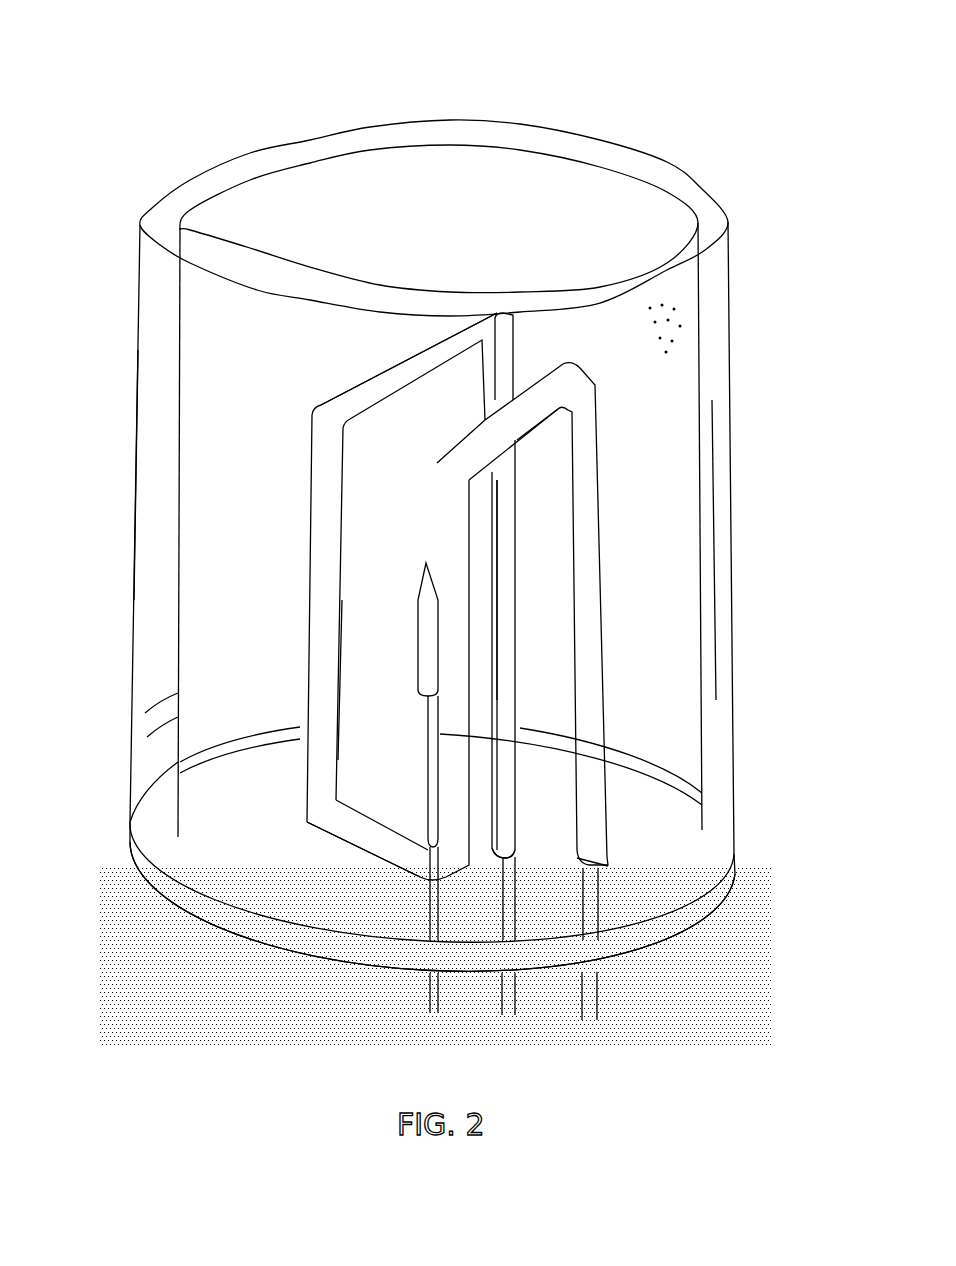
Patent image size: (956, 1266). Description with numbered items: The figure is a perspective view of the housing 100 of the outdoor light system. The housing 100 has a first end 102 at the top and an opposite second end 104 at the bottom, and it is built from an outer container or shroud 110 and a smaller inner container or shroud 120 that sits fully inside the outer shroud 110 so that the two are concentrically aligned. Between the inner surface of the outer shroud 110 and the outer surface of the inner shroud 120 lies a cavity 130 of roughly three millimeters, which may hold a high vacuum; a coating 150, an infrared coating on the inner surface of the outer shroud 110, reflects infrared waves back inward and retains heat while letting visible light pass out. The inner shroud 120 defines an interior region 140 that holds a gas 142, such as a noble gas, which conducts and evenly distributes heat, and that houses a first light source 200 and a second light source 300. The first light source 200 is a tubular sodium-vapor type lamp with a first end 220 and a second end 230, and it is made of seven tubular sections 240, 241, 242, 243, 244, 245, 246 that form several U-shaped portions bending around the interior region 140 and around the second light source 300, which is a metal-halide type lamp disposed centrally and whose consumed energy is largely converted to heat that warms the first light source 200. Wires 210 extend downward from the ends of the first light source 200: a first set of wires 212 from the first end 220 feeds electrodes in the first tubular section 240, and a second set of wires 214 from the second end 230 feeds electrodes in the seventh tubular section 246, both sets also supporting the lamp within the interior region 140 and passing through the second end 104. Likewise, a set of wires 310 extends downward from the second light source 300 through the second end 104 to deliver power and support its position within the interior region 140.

The housing 100 is at (163, 80).
The first end 102 is at (523, 93).
The second end 104 is at (327, 970).
The outer shroud 110 is at (140, 290).
The inner shroud 120 is at (178, 358).
The cavity 130 is at (146, 424).
The interior region 140 is at (668, 390).
The gas 142 is at (688, 303).
The coating 150 is at (138, 742).
The first light source 200 is at (451, 467).
The wires 210 is at (562, 1048).
The first set of wires 212 is at (592, 995).
The second set of wires 214 is at (506, 996).
The first end 220 is at (585, 865).
The second end 230 is at (500, 850).
The first tubular section 240 is at (582, 553).
The tubular section 241 is at (507, 422).
The tubular section 242 is at (455, 737).
The tubular section 243 is at (350, 822).
The tubular section 244 is at (325, 527).
The tubular section 245 is at (405, 370).
The seventh tubular section 246 is at (497, 553).
The second light source 300 is at (425, 630).
The set of wires 310 is at (421, 1022).